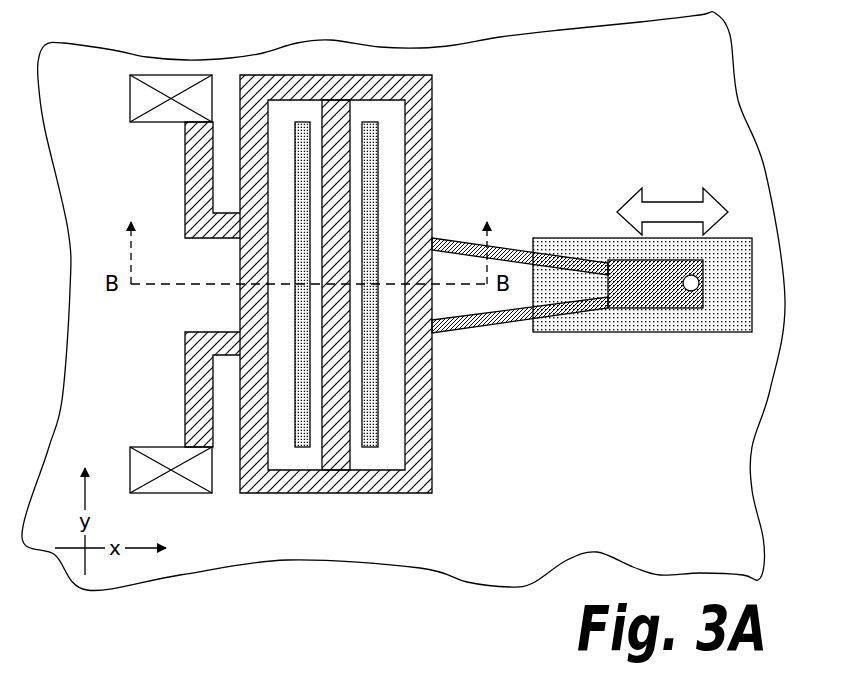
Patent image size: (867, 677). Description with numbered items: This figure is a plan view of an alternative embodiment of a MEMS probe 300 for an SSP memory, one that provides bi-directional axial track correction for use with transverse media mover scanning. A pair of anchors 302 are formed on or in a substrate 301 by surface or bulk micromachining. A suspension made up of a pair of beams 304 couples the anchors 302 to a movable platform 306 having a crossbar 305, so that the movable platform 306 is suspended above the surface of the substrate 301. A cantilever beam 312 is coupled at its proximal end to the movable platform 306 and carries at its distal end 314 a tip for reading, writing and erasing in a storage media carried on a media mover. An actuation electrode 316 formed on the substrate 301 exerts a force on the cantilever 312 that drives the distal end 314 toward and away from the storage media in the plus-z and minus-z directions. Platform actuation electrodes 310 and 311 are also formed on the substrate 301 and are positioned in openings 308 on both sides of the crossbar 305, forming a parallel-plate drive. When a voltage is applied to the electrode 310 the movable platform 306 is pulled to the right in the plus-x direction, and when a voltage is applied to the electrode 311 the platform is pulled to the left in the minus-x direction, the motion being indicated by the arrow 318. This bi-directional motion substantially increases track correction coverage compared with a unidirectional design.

The MEMS probe 300 is at (636, 92).
The substrate 301 is at (273, 58).
The anchors 302 is at (143, 108).
The beams 304 is at (190, 193).
The crossbar 305 is at (340, 457).
The movable platform 306 is at (433, 76).
The openings 308 is at (388, 172).
The platform actuation electrode 310 is at (377, 427).
The platform actuation electrode 311 is at (300, 334).
The cantilever beam 312 is at (525, 250).
The distal end 314 is at (651, 309).
The actuation electrode 316 is at (725, 333).
The arrow 318 is at (672, 211).